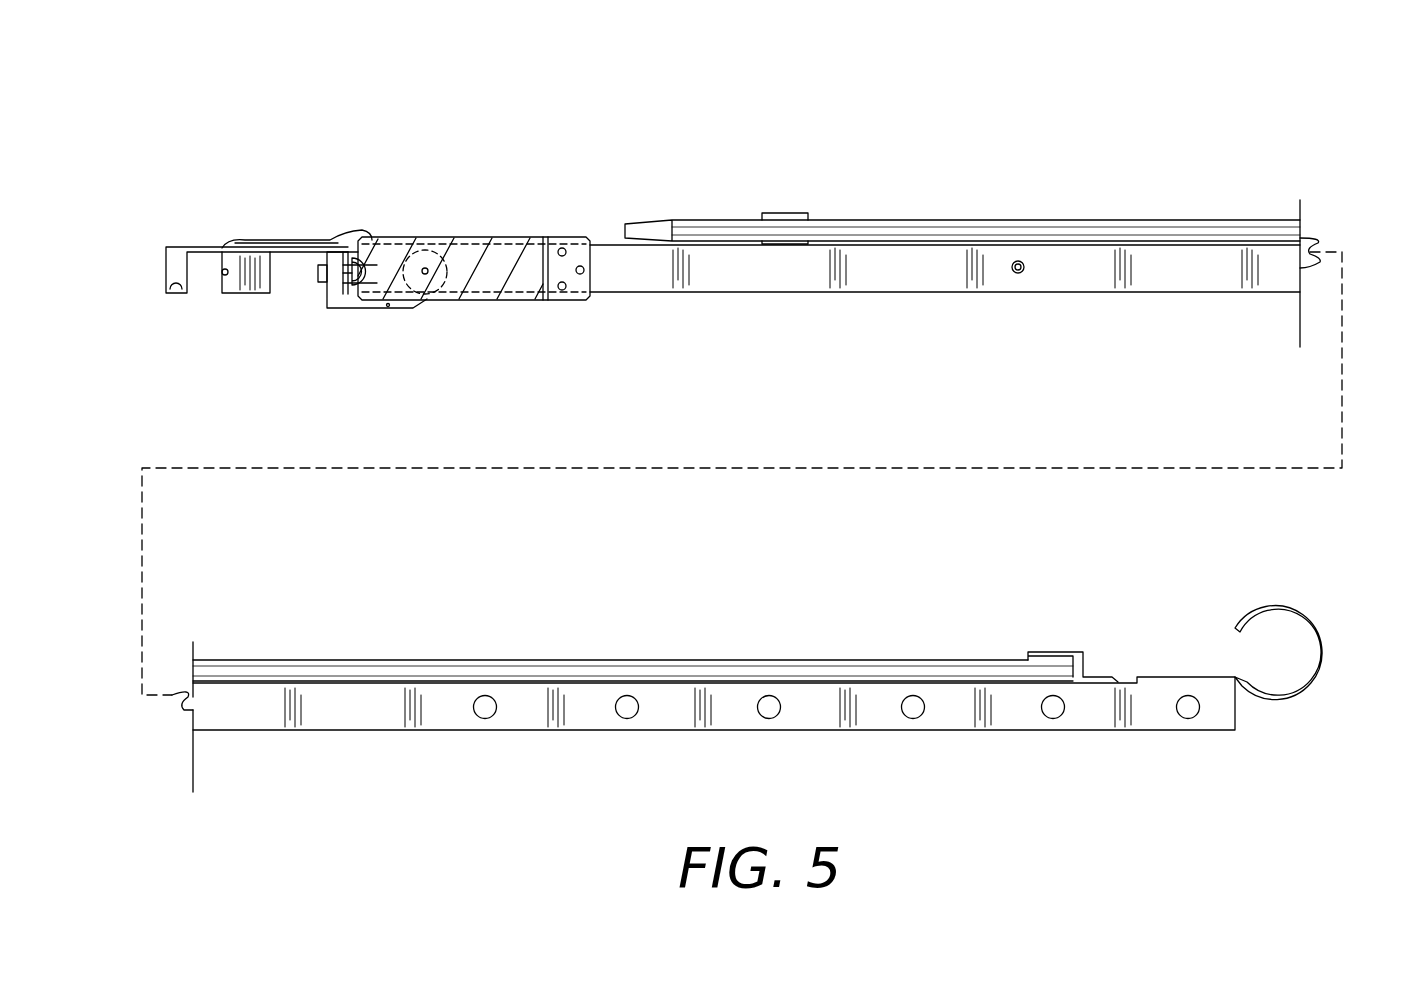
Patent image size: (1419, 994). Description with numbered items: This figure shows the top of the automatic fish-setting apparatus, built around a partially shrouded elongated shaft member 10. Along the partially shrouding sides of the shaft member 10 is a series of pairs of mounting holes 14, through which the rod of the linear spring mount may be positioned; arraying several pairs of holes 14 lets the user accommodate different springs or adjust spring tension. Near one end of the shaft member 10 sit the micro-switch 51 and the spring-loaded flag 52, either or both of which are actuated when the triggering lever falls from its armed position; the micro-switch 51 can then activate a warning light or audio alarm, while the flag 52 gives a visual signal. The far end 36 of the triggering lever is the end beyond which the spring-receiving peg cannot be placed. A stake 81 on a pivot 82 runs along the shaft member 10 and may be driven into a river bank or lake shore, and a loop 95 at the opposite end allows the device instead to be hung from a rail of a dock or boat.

The partially shrouded elongated shaft member 10 is at (798, 190).
The mounting holes 14 is at (473, 707).
The far end of the triggering lever 36 is at (318, 275).
The micro-switch 51 is at (225, 273).
The spring-loaded flag 52 is at (583, 220).
The stake 81 is at (1087, 220).
The pivot 82 is at (1050, 650).
The loop 95 is at (1323, 627).